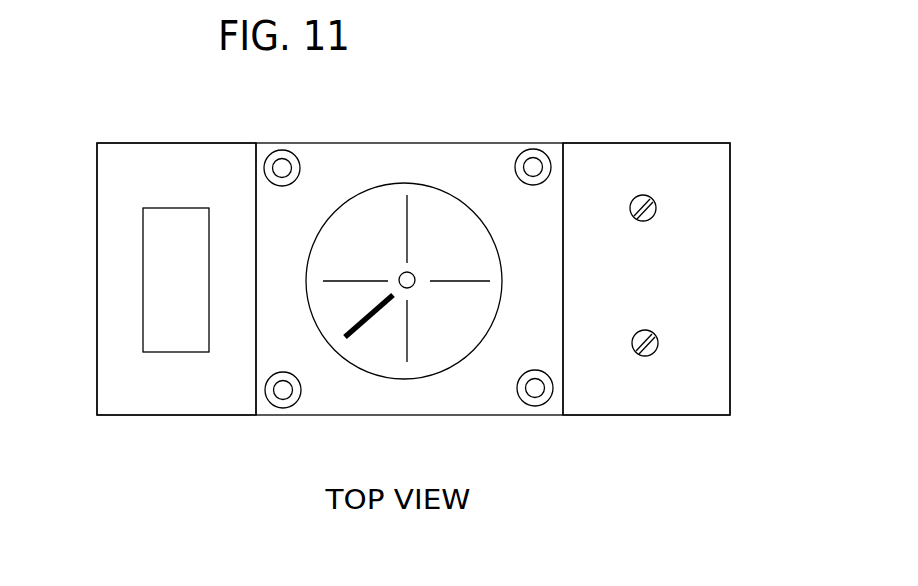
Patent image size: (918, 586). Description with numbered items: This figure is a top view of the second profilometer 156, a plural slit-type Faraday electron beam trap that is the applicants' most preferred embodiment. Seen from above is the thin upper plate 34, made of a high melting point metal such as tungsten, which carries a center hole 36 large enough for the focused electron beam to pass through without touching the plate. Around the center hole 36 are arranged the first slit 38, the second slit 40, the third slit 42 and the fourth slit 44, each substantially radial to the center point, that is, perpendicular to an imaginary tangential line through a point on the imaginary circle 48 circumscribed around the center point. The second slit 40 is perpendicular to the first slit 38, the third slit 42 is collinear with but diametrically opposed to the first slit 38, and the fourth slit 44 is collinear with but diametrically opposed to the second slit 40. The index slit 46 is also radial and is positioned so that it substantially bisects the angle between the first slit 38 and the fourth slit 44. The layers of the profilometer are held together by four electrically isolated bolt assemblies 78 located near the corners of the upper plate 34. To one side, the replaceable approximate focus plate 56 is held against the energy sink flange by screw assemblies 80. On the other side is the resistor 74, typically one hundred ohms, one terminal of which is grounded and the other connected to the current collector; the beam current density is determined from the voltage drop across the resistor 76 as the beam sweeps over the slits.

The upper plate 34 is at (382, 155).
The center hole 36 is at (410, 271).
The first slit 38 is at (412, 340).
The second slit 40 is at (477, 282).
The third slit 42 is at (410, 207).
The fourth slit 44 is at (338, 280).
The index slit 46 is at (360, 333).
The imaginary circle 48 is at (475, 210).
The approximate focus plate 56 is at (715, 263).
The resistor 74 is at (178, 155).
The resistor 76 is at (170, 257).
The bolt assemblies 78 is at (285, 152).
The screw assemblies 80 is at (643, 198).
The second profilometer 156 is at (325, 419).